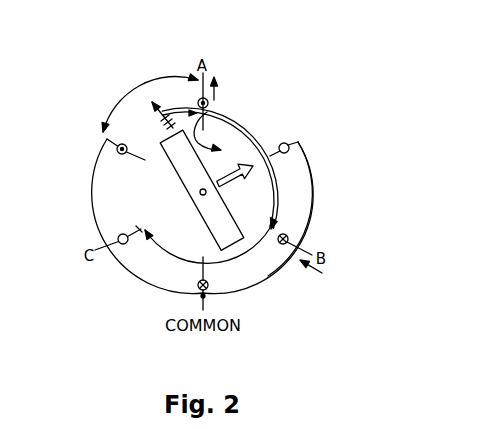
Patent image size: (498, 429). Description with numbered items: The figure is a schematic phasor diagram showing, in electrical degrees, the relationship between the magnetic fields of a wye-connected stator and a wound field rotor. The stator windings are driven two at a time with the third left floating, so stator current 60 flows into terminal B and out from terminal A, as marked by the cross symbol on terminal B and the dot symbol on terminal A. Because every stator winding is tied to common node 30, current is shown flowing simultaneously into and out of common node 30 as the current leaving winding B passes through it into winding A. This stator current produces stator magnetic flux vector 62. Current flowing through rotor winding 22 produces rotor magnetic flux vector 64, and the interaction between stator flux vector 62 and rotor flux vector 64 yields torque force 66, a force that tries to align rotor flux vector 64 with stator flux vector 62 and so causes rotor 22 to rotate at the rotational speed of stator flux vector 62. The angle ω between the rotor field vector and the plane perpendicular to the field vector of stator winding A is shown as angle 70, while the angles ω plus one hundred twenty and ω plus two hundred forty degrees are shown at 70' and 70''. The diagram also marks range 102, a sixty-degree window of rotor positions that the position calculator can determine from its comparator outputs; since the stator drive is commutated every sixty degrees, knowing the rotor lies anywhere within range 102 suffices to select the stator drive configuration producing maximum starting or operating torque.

The rotor winding 22 is at (233, 253).
The common node 30 is at (117, 149).
The stator current 60 is at (231, 74).
The stator magnetic flux vector 62 is at (228, 187).
The rotor magnetic flux vector 64 is at (158, 114).
The torque force 66 is at (222, 118).
The angle ω 70 is at (184, 105).
The angle (ω+120) 70' is at (293, 176).
The angle (ω+240) 70'' is at (188, 271).
The range 102 is at (108, 123).